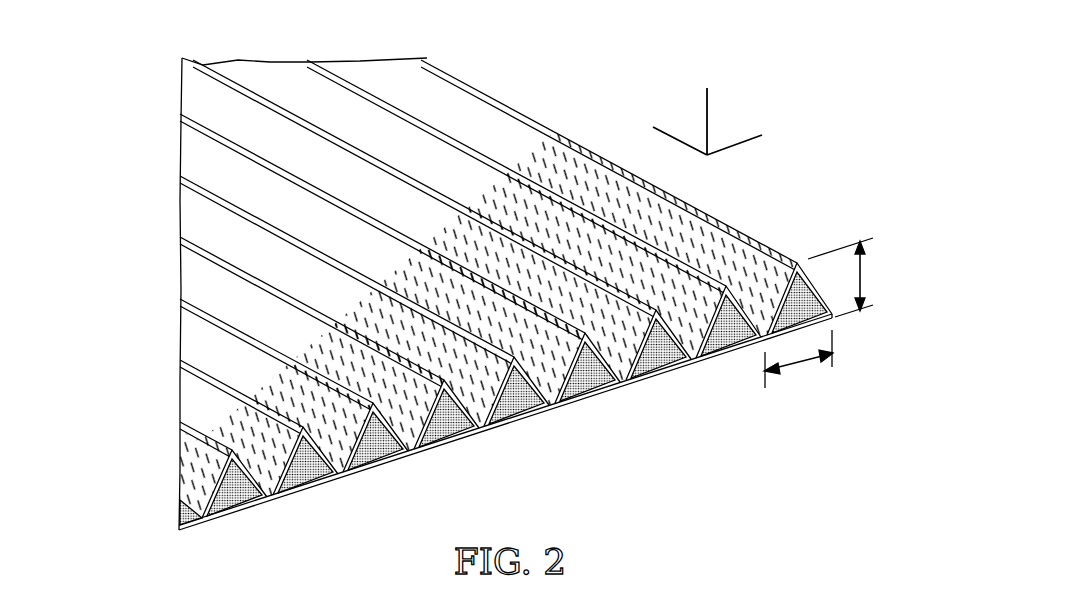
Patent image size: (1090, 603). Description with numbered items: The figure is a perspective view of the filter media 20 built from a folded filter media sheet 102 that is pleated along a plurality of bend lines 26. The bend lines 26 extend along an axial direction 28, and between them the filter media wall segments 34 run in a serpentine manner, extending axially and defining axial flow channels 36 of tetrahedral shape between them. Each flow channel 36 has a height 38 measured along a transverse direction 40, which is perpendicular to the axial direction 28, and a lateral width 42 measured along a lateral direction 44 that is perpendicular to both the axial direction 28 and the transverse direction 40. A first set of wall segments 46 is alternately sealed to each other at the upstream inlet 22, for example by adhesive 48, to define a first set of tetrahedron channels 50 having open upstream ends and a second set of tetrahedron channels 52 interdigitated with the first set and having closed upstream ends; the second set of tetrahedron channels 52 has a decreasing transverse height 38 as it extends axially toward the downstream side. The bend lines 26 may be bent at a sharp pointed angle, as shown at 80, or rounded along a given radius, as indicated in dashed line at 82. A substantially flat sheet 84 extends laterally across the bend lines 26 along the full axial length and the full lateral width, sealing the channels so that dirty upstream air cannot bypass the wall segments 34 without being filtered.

The corrugated panel 20 is at (453, 268).
The upstream inlet 22 is at (826, 272).
The bend lines 26 is at (200, 514).
The axial direction 28 is at (669, 130).
The filter media wall segments 34 is at (207, 407).
The flow channels 36 is at (362, 479).
The height 38 is at (862, 282).
The transverse direction 40 is at (708, 117).
The lateral width 42 is at (800, 364).
The lateral direction 44 is at (739, 138).
The first set of wall segments 46 is at (385, 447).
The adhesive 48 is at (458, 430).
The first set of tetrahedron channels 50 is at (560, 408).
The second set of tetrahedron channels 52 is at (667, 377).
The sharp pointed angle 80 is at (797, 260).
The rounded bend line 82 is at (742, 286).
The flat sheet 84 is at (183, 532).
The folded filter media sheet 102 is at (197, 158).